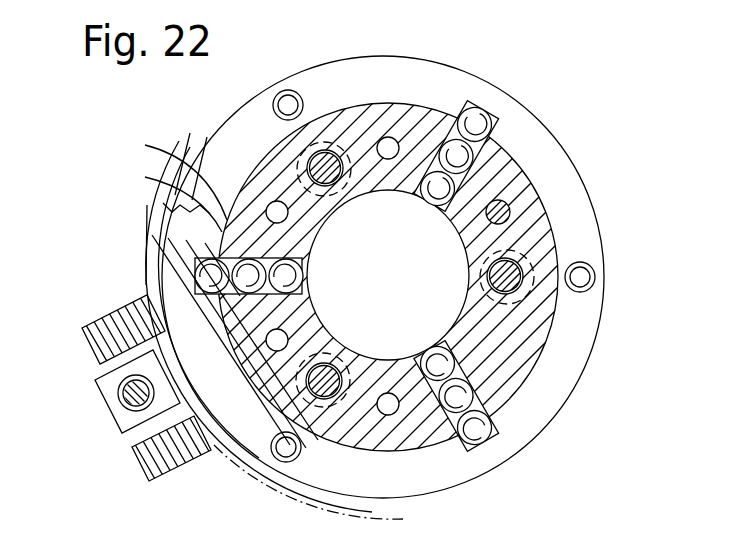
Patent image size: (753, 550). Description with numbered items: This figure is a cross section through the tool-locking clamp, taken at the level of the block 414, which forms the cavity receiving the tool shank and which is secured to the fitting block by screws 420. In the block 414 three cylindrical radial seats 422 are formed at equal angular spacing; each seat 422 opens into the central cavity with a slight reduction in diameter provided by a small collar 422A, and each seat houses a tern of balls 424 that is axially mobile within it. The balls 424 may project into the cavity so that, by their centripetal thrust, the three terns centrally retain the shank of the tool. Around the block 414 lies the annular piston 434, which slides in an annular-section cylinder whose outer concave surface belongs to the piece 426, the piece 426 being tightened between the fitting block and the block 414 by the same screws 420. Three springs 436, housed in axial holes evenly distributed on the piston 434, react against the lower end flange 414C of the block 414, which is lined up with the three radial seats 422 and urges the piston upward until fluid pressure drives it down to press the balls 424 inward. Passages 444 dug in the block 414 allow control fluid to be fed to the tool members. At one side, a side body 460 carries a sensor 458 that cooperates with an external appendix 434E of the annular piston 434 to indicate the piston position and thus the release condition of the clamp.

The block 414 is at (517, 187).
The lower end flange 414C is at (550, 375).
The screws 420 is at (517, 262).
The cylindrical radial seats 422 is at (183, 186).
The small collar 422A is at (413, 194).
The balls 424 is at (450, 190).
The piece 426 is at (150, 255).
The annular piston 434 is at (235, 425).
The external appendix 434E is at (117, 413).
The springs 436 is at (300, 95).
The passages 444 is at (178, 151).
The sensor 458 is at (122, 390).
The side body 460 is at (93, 327).